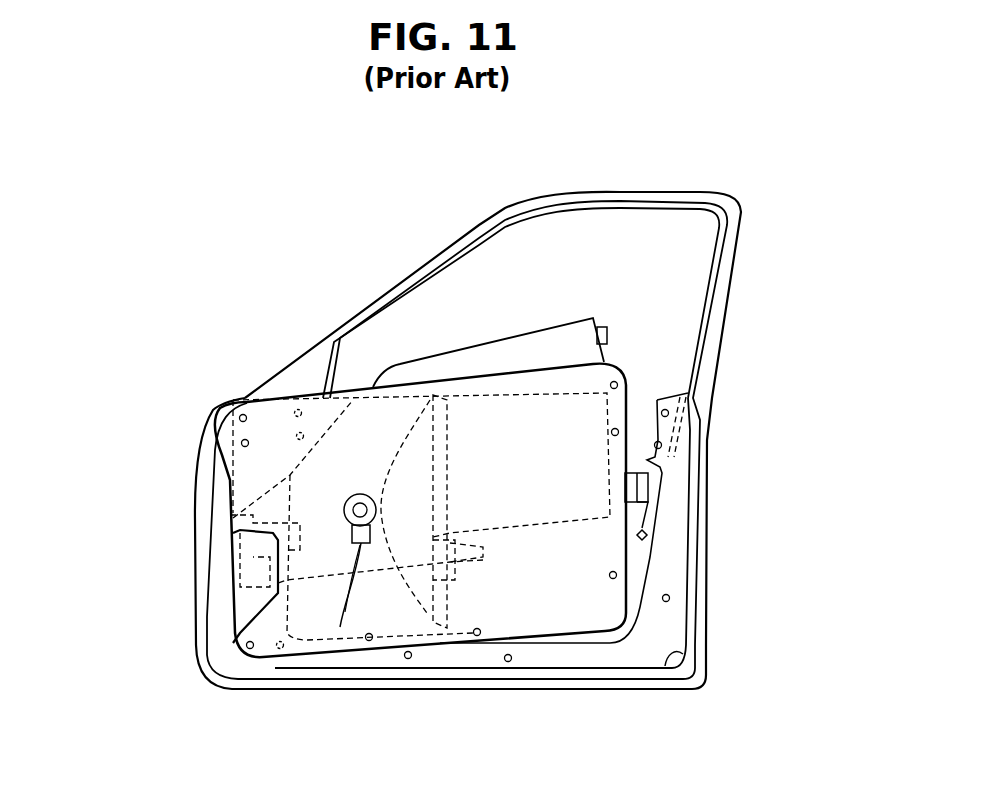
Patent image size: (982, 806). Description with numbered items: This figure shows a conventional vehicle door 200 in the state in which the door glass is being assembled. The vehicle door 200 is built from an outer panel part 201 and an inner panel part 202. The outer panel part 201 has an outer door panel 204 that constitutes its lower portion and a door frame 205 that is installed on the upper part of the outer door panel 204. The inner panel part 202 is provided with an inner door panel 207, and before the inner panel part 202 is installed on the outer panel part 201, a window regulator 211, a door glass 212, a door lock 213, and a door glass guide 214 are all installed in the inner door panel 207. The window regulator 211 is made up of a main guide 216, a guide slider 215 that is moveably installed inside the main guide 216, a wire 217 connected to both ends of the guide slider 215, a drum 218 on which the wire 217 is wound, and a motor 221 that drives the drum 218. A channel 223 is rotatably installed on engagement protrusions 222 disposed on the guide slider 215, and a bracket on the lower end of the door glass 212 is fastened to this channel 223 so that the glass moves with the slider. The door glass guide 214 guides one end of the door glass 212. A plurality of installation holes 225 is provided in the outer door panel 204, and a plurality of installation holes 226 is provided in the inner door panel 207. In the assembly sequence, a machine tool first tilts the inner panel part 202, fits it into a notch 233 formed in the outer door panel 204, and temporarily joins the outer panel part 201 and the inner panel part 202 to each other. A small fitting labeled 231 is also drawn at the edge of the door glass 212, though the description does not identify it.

The vehicle door 200 is at (327, 238).
The outer panel part 201 is at (661, 192).
The inner panel part 202 is at (622, 360).
The outer door panel 204 is at (698, 520).
The door frame 205 is at (530, 210).
The inner door panel 207 is at (600, 610).
The window regulator 211 is at (457, 445).
The door glass 212 is at (558, 345).
The door lock 213 is at (644, 487).
The door glass guide 214 is at (240, 567).
The guide slider 215 is at (450, 537).
The main guide 216 is at (450, 490).
The wire 217 is at (450, 467).
The drum 218 is at (354, 492).
The motor 221 is at (345, 612).
The engagement protrusions 222 is at (450, 563).
The channel 223 is at (485, 548).
The installation holes 225 is at (298, 432).
The installation holes 226 is at (242, 440).
The glass holder 231 is at (610, 335).
The notch 233 is at (680, 649).